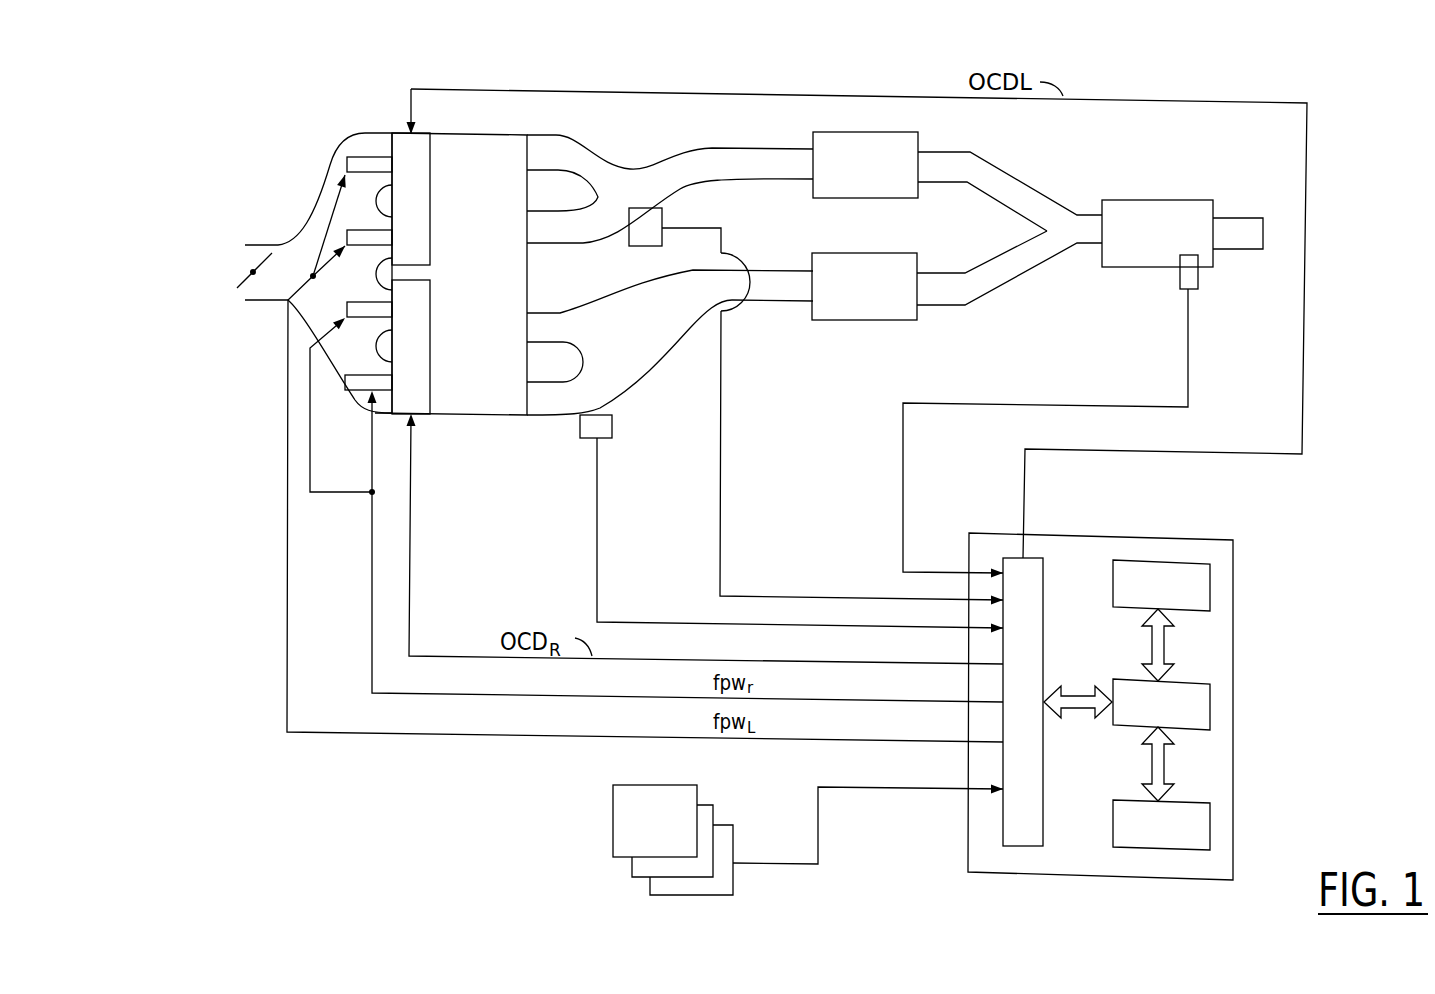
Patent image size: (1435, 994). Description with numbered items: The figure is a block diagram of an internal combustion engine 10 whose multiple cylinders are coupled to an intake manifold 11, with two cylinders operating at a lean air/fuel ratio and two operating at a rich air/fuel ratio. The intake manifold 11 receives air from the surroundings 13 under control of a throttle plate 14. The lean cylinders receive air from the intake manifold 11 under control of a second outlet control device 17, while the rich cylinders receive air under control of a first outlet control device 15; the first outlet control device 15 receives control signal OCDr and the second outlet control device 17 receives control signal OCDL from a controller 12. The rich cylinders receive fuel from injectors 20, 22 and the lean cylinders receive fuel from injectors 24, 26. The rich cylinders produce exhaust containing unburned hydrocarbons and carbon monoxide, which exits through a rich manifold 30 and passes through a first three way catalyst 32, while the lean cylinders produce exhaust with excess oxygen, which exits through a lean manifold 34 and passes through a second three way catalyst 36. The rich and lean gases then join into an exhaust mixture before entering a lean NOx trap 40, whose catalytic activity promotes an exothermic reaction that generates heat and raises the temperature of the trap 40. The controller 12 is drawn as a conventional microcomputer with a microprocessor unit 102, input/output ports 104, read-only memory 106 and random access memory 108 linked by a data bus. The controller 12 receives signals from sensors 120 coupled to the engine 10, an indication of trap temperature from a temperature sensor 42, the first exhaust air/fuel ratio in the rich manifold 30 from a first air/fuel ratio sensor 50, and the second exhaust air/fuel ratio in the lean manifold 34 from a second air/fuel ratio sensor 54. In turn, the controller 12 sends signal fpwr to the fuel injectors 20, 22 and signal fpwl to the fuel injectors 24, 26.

The internal combustion engine 10 is at (386, 308).
The intake manifold 11 is at (302, 235).
The controller 12 is at (1133, 697).
The surroundings 13 is at (118, 401).
The throttle plate 14 is at (253, 272).
The first outlet control device 15 is at (430, 352).
The second outlet control device 17 is at (430, 215).
The fuel injector 20 is at (346, 310).
The fuel injector 22 is at (346, 385).
The fuel injector 24 is at (346, 236).
The fuel injector 26 is at (346, 166).
The rich manifold 30 is at (635, 382).
The first three way catalyst 32 is at (895, 252).
The lean manifold 34 is at (681, 148).
The second three way catalyst 36 is at (870, 132).
The lean NOx trap 40 is at (1173, 200).
The temperature sensor 42 is at (1076, 402).
The first air/fuel ratio sensor 50 is at (598, 465).
The second air/fuel ratio sensor 54 is at (710, 226).
The microprocessor unit 102 is at (1212, 697).
The input/output ports 104 is at (1025, 557).
The read-only memory 106 is at (1212, 578).
The random access memory 108 is at (1212, 815).
The sensors 120 is at (613, 798).